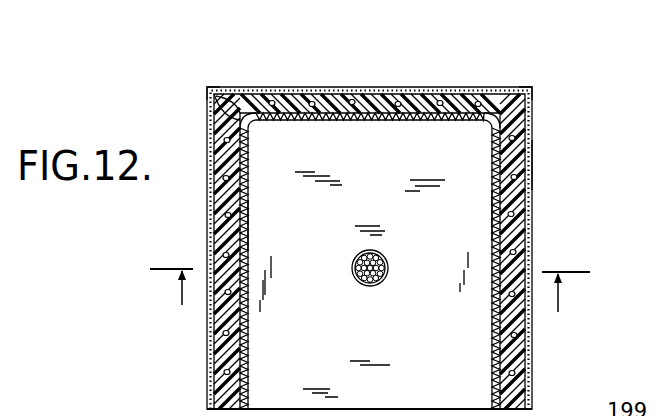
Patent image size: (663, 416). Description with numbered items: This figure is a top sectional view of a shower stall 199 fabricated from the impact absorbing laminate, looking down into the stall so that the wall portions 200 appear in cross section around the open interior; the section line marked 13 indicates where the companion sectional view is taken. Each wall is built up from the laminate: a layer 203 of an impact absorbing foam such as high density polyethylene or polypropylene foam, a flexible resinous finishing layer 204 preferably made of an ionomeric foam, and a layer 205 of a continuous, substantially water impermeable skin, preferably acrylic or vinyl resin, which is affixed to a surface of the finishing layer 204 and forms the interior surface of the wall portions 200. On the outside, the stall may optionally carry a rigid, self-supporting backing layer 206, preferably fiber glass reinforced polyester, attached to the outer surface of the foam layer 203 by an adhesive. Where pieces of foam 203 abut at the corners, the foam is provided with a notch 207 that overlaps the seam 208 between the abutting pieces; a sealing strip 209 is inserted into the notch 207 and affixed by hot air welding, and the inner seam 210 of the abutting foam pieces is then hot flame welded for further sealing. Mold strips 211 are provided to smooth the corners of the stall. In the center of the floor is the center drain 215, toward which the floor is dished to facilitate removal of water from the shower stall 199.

The shower stall 199 is at (387, 84).
The wall portions 200 is at (384, 123).
The layer of impact absorbing foam 203 is at (223, 205).
The flexible resinous finishing layer 204 is at (491, 212).
The layer of water impermeable skin 205 is at (249, 224).
The rigid self-supporting backing layer 206 is at (531, 166).
The notch 207 is at (213, 93).
The seam 208 is at (530, 93).
The sealing strip 209 is at (226, 114).
The inner seam 210 is at (236, 116).
The mold strips 211 is at (246, 116).
The center drain 215 is at (371, 286).
The section line 13- 13 is at (372, 290).